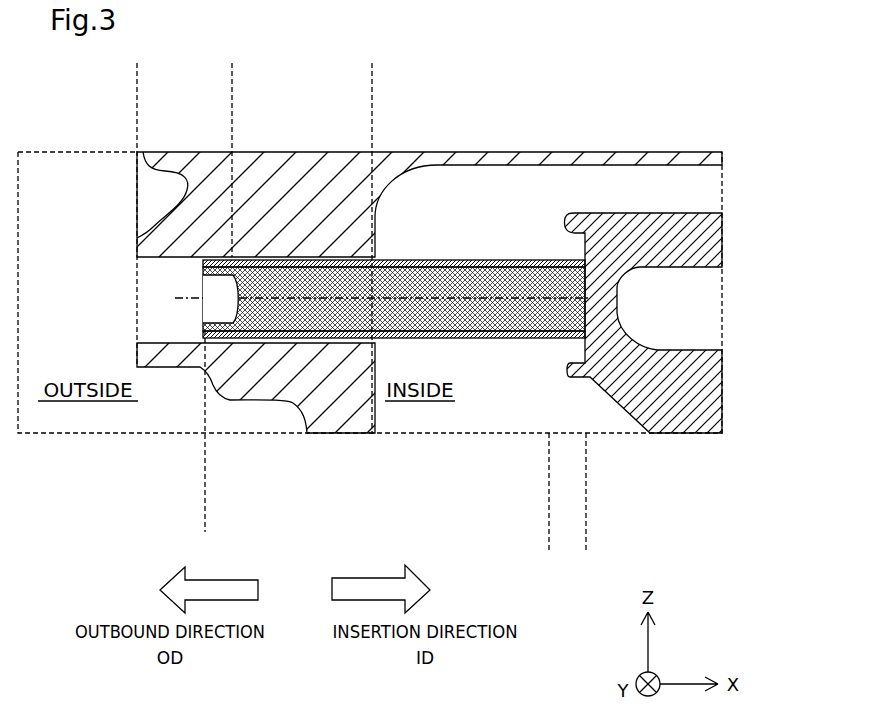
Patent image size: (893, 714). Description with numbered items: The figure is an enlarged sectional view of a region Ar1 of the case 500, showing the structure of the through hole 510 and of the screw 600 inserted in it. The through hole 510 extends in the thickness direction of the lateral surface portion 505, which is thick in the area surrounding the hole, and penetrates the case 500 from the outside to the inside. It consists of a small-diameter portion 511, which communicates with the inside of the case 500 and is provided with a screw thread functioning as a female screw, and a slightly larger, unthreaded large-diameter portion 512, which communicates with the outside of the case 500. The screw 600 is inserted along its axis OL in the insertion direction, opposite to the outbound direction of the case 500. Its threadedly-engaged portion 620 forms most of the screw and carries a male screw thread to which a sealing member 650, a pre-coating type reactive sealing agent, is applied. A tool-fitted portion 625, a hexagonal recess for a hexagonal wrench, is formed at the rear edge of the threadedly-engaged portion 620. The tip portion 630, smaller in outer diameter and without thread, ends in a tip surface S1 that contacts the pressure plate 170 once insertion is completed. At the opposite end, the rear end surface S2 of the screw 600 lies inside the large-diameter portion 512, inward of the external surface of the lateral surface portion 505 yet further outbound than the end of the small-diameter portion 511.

The case 500 is at (541, 136).
The lateral surface portion 505 is at (180, 150).
The through hole 510 is at (118, 329).
The small-diameter portion 511 is at (232, 82).
The large-diameter portion 512 is at (137, 82).
The screw 600 is at (508, 231).
The threadedly-engaged portion 620 is at (205, 503).
The tool-fitted portion 625 is at (196, 297).
The tip portion 630 is at (510, 530).
The sealing member 650 is at (437, 259).
The pressure plate 170 is at (690, 433).
The region Ar1 is at (652, 150).
The axis OL is at (620, 297).
The tip surface S1 is at (622, 318).
The rear end surface S2 is at (200, 269).